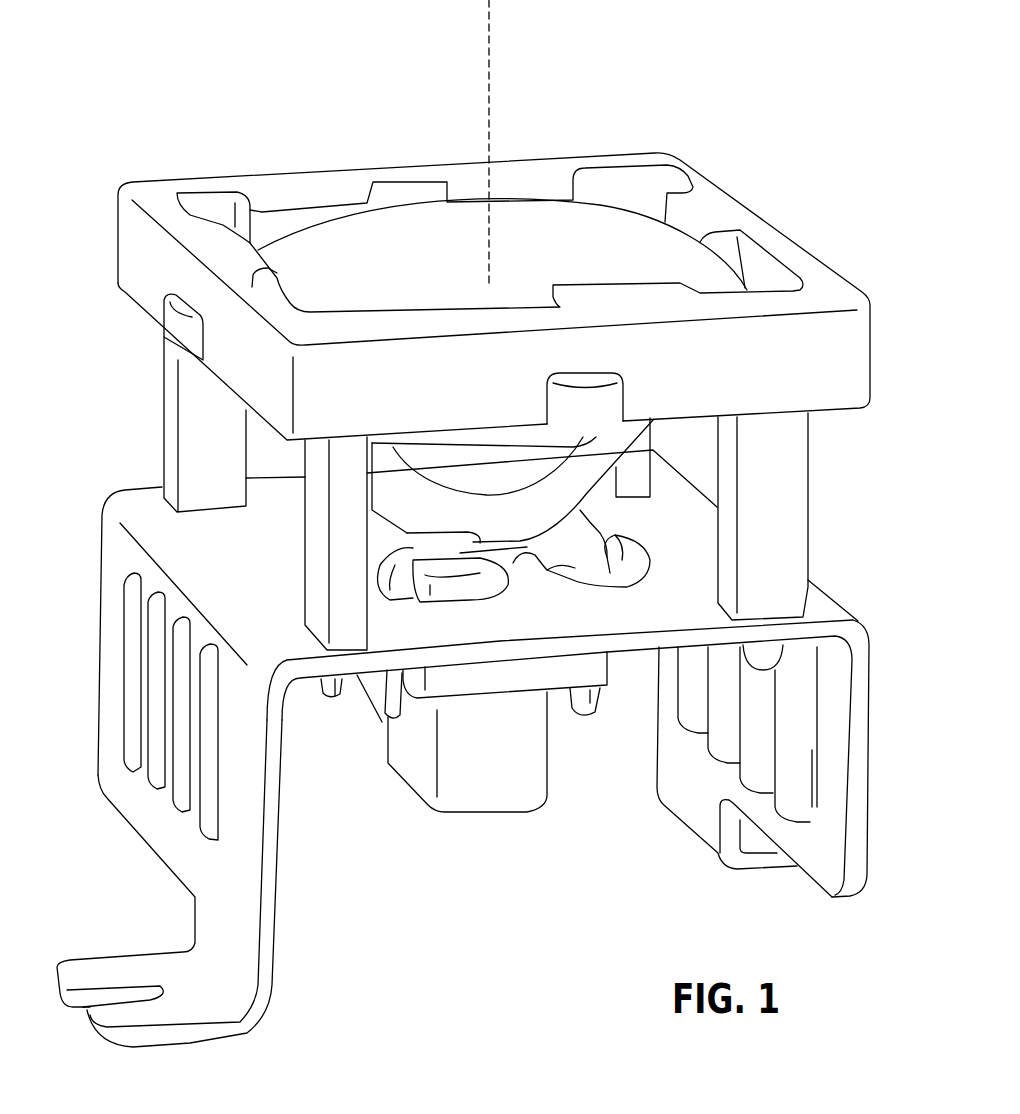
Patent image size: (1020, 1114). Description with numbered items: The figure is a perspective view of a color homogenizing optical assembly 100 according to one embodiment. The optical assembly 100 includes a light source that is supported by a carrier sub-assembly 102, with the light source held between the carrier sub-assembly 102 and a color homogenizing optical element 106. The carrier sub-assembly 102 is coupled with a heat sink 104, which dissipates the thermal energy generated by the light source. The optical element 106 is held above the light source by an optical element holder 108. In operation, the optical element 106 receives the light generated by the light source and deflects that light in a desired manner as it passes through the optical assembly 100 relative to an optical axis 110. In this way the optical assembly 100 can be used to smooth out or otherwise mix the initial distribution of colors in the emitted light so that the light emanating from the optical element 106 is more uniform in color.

The color homogenizing optical assembly 100 is at (829, 115).
The carrier sub-assembly 102 is at (502, 788).
The heat sink 104 is at (235, 873).
The color homogenizing optical element 106 is at (515, 237).
The optical element holder 108 is at (170, 208).
The optical axis 110 is at (492, 45).